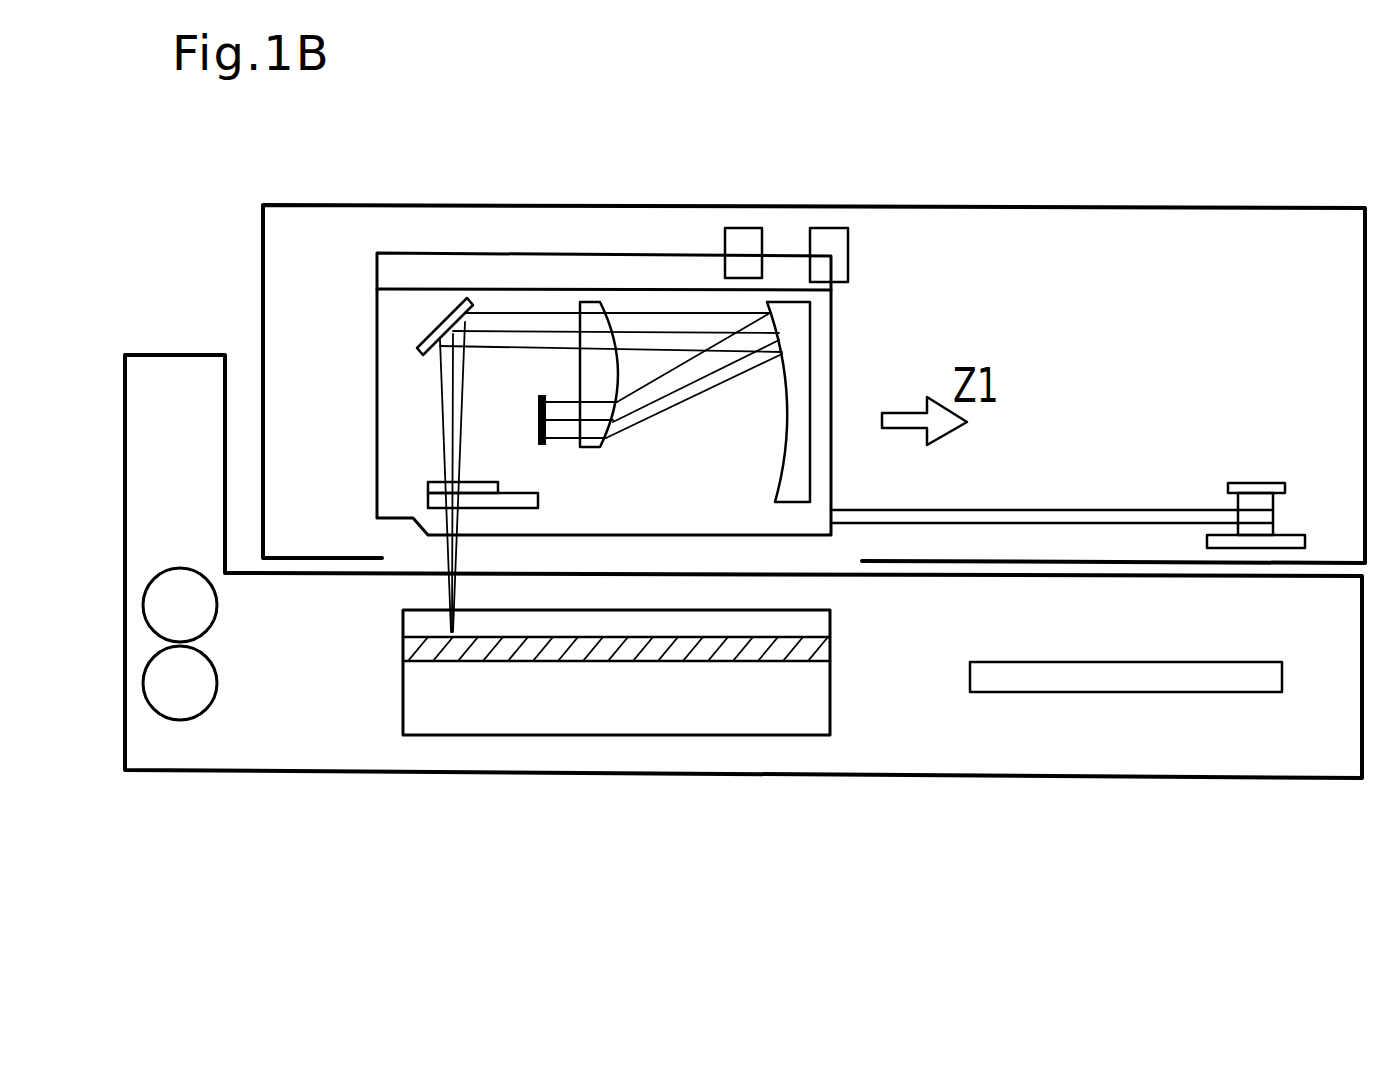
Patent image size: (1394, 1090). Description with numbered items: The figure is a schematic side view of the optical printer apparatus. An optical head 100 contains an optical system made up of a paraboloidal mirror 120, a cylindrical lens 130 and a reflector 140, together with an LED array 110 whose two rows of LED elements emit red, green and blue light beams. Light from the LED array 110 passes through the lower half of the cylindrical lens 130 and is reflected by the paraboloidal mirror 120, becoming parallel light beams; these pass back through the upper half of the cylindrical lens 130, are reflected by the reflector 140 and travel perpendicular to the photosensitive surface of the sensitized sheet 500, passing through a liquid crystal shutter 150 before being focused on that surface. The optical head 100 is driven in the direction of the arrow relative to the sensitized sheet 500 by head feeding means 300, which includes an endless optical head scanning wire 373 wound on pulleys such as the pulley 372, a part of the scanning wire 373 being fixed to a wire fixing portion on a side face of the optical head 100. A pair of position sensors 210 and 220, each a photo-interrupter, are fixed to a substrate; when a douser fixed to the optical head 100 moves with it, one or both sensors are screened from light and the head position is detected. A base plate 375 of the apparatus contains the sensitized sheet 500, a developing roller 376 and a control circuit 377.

The optical head 100 is at (832, 320).
The LED array 110 is at (538, 428).
The paraboloidal mirror 120 is at (779, 463).
The cylindrical lens 130 is at (588, 447).
The reflector 140 is at (437, 327).
The liquid crystal shutter 150 is at (538, 500).
The position sensor 210 is at (742, 228).
The position sensor 220 is at (828, 228).
The head feeding means 300 is at (1080, 444).
The pulley 372 is at (1213, 492).
The optical head scanning wire 373 is at (1003, 510).
The base plate 375 is at (1113, 778).
The developing roller 376 is at (210, 633).
The control circuit 377 is at (1215, 692).
The sensitized sheet 500 is at (662, 648).